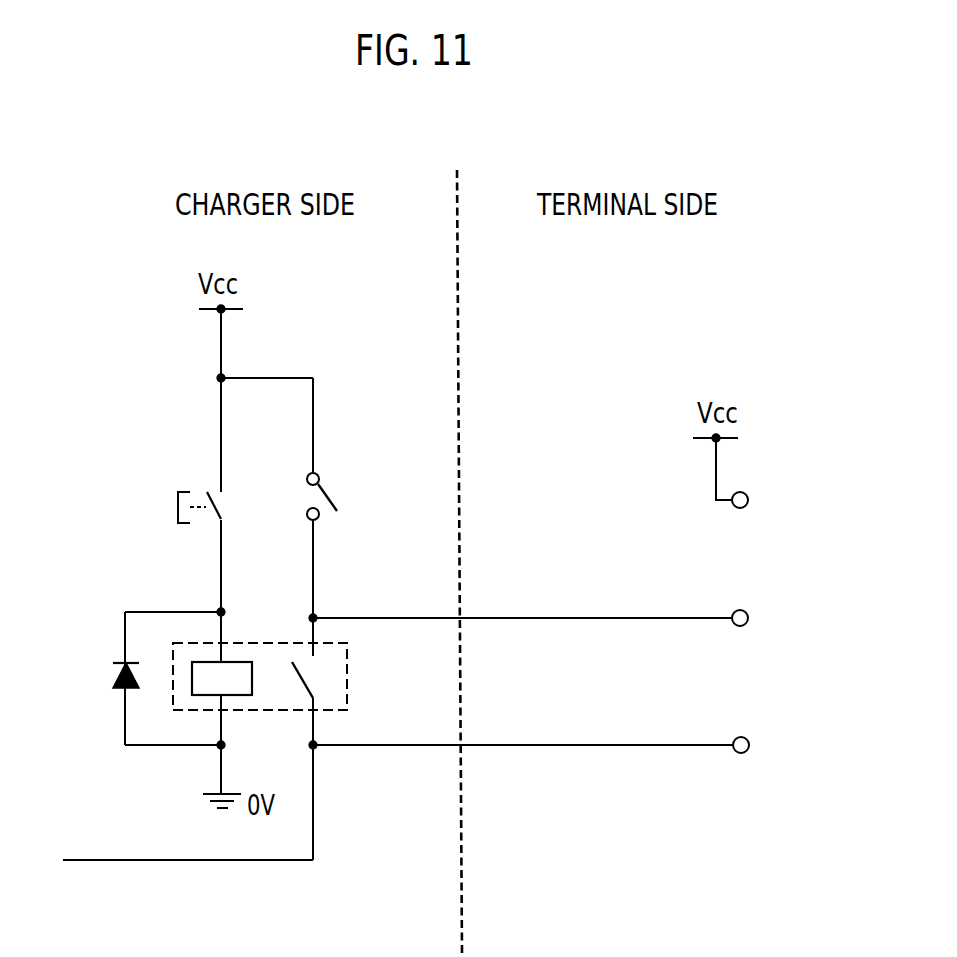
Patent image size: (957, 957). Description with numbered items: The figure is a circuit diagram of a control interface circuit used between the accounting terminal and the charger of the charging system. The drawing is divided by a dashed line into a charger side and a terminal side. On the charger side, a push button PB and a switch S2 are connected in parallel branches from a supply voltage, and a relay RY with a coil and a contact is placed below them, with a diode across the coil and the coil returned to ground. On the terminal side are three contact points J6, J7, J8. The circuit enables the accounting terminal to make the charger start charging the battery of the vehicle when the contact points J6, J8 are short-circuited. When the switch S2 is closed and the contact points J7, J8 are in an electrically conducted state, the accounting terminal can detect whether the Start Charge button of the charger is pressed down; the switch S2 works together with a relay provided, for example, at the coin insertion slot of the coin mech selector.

The push button switch PB is at (152, 499).
The relay RY is at (268, 634).
The switch S2 is at (358, 517).
The contact point J6 is at (748, 502).
The contact point J7 is at (748, 620).
The contact point J8 is at (749, 747).